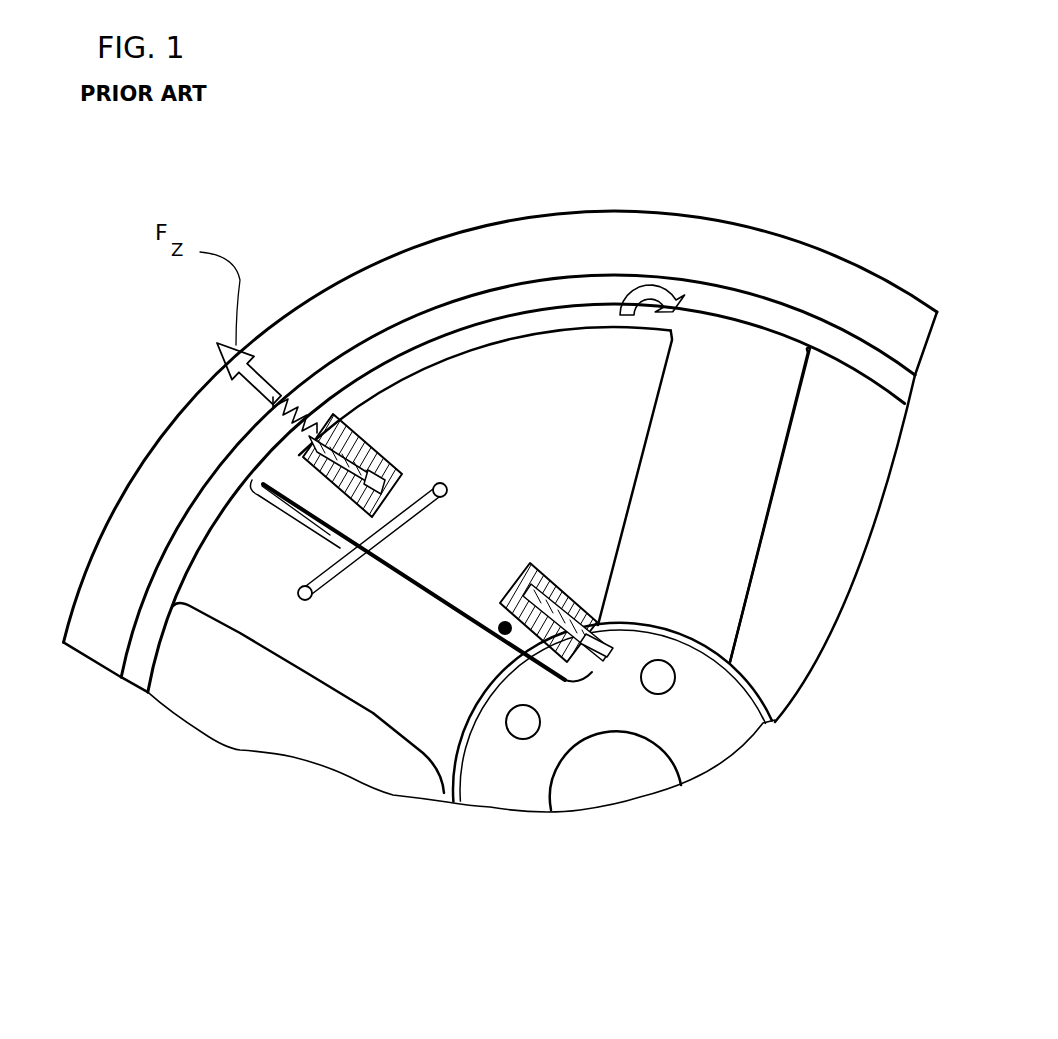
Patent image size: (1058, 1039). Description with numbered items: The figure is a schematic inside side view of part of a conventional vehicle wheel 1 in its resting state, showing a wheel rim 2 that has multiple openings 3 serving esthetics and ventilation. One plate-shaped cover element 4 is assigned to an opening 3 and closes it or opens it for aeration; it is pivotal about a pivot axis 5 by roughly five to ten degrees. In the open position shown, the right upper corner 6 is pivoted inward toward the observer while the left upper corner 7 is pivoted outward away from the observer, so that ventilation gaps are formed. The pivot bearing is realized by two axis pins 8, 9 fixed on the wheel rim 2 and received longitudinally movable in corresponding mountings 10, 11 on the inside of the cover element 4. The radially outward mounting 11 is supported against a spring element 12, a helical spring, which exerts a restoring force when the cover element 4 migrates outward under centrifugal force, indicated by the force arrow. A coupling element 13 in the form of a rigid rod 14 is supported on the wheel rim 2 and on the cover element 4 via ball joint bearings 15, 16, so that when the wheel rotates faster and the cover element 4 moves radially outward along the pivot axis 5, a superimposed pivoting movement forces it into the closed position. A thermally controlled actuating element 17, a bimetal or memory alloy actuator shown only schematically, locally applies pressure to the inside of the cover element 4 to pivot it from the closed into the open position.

The vehicle wheel 1 is at (694, 164).
The wheel rim 2 is at (853, 283).
The opening 3 is at (601, 318).
The cover element 4 is at (527, 367).
The pivot axis 5 is at (610, 627).
The right upper corner 6 is at (650, 347).
The left upper corner 7 is at (297, 467).
The inner axis pin 8 is at (600, 660).
The outer axis pin 9 is at (347, 420).
The mounting 10 is at (530, 618).
The mounting 11 is at (382, 440).
The spring element 12 is at (305, 420).
The coupling element 13 is at (393, 560).
The rigid rod 14 is at (407, 520).
The ball joint bearing 15 is at (303, 600).
The ball joint bearing 16 is at (447, 486).
The thermally controlled actuating element 17 is at (502, 633).